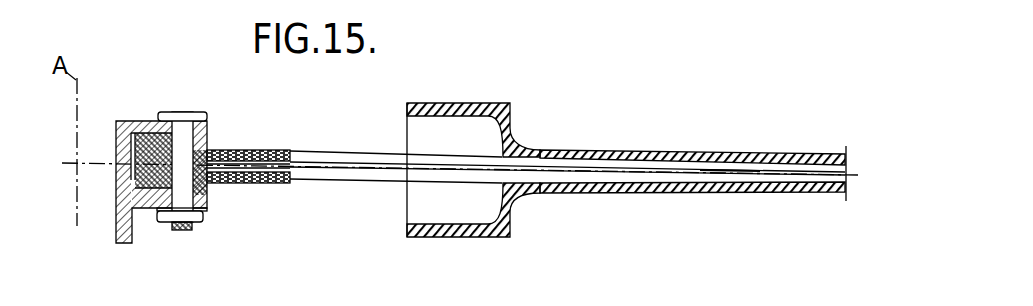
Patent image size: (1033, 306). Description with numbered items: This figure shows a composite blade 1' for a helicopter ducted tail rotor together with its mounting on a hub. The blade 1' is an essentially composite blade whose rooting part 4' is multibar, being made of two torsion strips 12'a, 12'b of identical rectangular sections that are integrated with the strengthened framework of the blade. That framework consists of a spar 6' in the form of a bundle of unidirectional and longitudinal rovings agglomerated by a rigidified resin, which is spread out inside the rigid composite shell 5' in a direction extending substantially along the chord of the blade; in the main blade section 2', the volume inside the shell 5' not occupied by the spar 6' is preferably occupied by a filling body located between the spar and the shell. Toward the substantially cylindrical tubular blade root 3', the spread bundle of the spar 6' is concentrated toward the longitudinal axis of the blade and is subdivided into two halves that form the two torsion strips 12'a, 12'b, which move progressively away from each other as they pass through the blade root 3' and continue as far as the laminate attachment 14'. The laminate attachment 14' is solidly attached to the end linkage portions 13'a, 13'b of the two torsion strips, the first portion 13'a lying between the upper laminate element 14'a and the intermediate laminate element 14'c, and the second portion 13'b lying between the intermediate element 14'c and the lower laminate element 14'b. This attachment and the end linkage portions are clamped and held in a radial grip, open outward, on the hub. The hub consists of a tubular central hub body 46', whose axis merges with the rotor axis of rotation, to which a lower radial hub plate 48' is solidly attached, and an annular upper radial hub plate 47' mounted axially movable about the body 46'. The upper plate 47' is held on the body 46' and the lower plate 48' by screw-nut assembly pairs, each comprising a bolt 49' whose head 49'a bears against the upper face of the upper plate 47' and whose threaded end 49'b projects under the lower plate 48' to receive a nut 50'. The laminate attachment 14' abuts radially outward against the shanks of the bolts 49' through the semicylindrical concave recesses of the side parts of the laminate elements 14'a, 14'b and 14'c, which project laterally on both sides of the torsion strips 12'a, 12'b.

The blade 1' is at (693, 146).
The main blade section 2' is at (692, 131).
The blade root 3' is at (473, 147).
The rooting part 4' is at (567, 135).
The rigid composite shell 5' is at (730, 138).
The spar 6' is at (692, 149).
The torsion strip 12'a is at (265, 139).
The torsion strip 12'b is at (289, 205).
The end linkage portion 13'a is at (138, 98).
The end linkage portion 13'b is at (111, 198).
The laminate attachment 14' is at (289, 178).
The upper laminate element 14'a is at (149, 107).
The lower laminate element 14'b is at (150, 220).
The intermediate laminate element 14'c is at (83, 158).
The tubular central hub body 46' is at (92, 232).
The upper radial hub plate 47' is at (181, 156).
The lower radial hub plate 48' is at (208, 235).
The bolt 49' is at (215, 167).
The head 49'a is at (185, 92).
The threaded end 49'b is at (181, 253).
The nut 50' is at (207, 253).